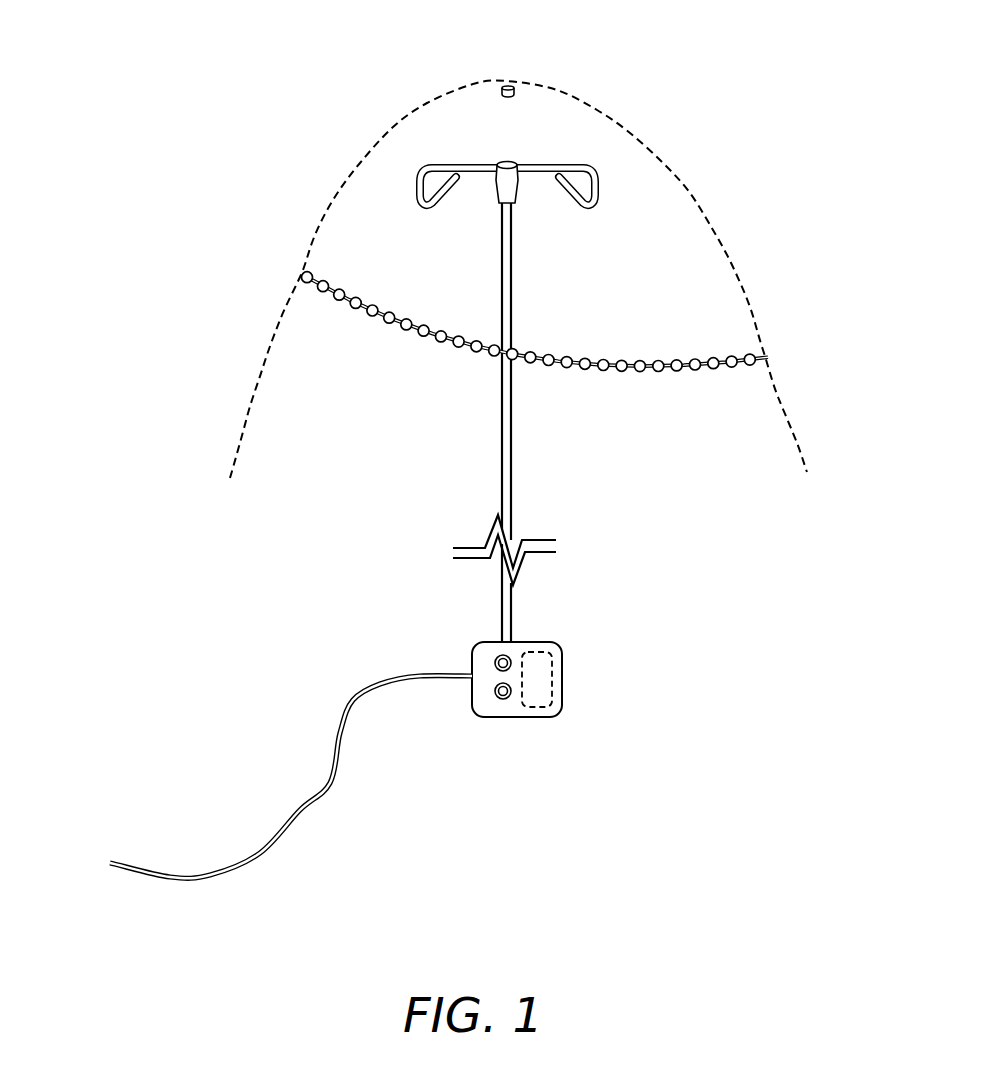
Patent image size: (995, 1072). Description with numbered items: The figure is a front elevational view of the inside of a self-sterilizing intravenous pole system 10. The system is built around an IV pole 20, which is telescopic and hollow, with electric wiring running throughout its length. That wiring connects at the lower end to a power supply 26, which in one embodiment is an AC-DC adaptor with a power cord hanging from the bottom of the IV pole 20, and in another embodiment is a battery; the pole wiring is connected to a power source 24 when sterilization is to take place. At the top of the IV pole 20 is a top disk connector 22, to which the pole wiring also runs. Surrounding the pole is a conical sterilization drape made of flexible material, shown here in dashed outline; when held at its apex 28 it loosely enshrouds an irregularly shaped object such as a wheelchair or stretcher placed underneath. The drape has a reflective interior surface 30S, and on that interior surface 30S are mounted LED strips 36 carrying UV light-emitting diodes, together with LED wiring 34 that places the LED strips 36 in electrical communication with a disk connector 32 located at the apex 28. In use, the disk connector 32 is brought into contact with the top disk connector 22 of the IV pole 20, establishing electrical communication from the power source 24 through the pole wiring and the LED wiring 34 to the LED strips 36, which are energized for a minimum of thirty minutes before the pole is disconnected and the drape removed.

The self-sterilizing intravenous (IV) pole system 10 is at (755, 201).
The intravenous (IV) pole 20 is at (560, 282).
The top disk connector 22 is at (510, 160).
The power source 24 is at (288, 830).
The power supply 26 is at (563, 674).
The apex 28 is at (472, 83).
The interior surface 30S is at (401, 428).
The disk connector 32 is at (509, 87).
The LED wiring 34 is at (750, 307).
The LED strips 36 is at (700, 369).